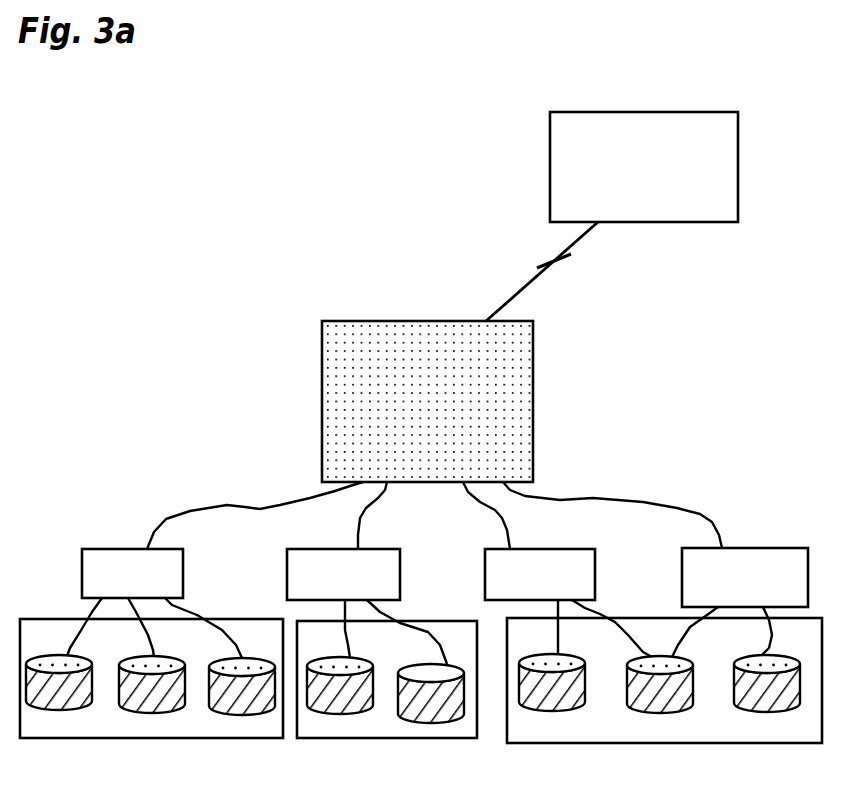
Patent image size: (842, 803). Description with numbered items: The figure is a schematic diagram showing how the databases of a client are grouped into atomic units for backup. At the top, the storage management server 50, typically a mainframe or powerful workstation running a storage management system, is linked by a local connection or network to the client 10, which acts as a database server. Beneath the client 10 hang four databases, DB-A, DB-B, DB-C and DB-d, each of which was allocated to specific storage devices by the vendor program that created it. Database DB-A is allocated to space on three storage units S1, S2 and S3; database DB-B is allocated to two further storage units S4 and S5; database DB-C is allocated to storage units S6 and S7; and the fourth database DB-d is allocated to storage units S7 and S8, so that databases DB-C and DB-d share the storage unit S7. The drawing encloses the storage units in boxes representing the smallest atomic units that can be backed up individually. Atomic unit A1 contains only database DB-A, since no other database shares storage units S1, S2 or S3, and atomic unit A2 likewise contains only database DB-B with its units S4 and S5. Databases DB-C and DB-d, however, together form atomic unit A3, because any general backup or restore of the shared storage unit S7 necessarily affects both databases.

The client 10 is at (412, 393).
The storage management server 50 is at (614, 167).
The database DB-A is at (206, 540).
The database DB-B is at (310, 541).
The database DB-C is at (505, 541).
The database DB-D DB-d is at (662, 544).
The atomic unit A1 is at (151, 697).
The atomic unit A2 is at (387, 698).
The atomic unit A3 is at (664, 698).
The storage unit S1 is at (64, 654).
The storage unit S2 is at (146, 655).
The storage unit S3 is at (220, 656).
The storage unit S4 is at (339, 657).
The storage unit S5 is at (415, 661).
The storage unit S6 is at (551, 655).
The storage unit S7 is at (645, 656).
The storage unit S8 is at (767, 659).